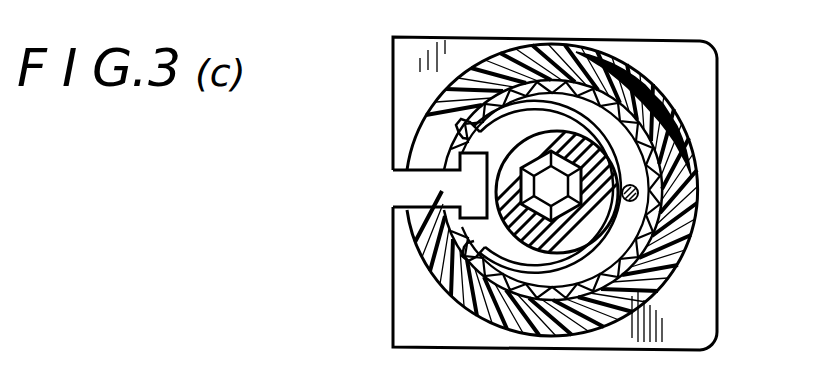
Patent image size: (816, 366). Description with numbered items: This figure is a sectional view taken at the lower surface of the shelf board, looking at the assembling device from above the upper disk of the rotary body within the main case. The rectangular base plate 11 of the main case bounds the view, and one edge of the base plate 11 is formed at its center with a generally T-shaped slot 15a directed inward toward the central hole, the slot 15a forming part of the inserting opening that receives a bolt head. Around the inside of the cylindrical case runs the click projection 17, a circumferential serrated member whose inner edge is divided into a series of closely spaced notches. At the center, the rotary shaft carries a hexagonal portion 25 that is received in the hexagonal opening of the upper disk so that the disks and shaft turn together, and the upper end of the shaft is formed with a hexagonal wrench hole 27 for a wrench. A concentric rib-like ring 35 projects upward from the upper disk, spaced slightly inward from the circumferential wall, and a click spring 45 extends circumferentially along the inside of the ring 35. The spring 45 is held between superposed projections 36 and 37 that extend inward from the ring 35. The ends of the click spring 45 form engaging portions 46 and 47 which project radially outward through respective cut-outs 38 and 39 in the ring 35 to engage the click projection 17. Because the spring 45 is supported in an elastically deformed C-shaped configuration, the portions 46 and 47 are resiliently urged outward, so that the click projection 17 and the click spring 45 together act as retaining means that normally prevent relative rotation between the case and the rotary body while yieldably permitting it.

The base plate 11 is at (666, 56).
The T-shaped slot 15a is at (467, 183).
The click projection 17 is at (672, 290).
The hexagonal portion 25 is at (583, 168).
The hexagonal wrench hole 27 is at (570, 189).
The rib-like ring 35 is at (594, 64).
The projection 36 is at (640, 198).
The projection 37 is at (650, 255).
The cut-out 38 is at (457, 87).
The cut-out 39 is at (463, 266).
The click spring 45 is at (618, 125).
The engaging portion 46 is at (447, 103).
The engaging portion 47 is at (492, 291).